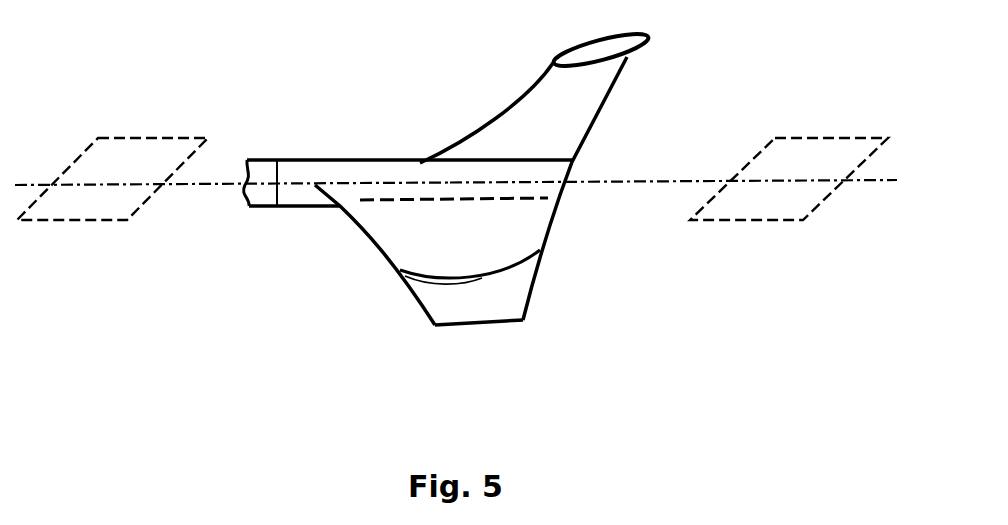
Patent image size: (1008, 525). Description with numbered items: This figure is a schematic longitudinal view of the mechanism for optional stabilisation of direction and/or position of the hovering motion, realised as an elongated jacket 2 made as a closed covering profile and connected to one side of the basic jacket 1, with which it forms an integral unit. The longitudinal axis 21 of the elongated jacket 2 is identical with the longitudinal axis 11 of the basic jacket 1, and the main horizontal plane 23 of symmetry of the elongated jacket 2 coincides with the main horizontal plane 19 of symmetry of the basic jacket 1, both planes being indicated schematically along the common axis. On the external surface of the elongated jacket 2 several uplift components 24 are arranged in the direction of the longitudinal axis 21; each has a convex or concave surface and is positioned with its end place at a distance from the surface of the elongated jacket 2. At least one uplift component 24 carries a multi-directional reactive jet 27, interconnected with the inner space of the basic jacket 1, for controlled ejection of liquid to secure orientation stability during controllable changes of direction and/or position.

The basic jacket 1 is at (485, 180).
The elongated jacket 2 is at (350, 158).
The longitudinal axis of the basic jacket 11 is at (220, 186).
The main horizontal plane of symmetry of the basic jacket 19 is at (78, 208).
The longitudinal axis of the elongated jacket 21 is at (645, 181).
The main horizontal plane of symmetry of the elongated jacket 23 is at (755, 207).
The uplift component 24 is at (550, 107).
The multi-directional reactive jet 27 is at (612, 47).